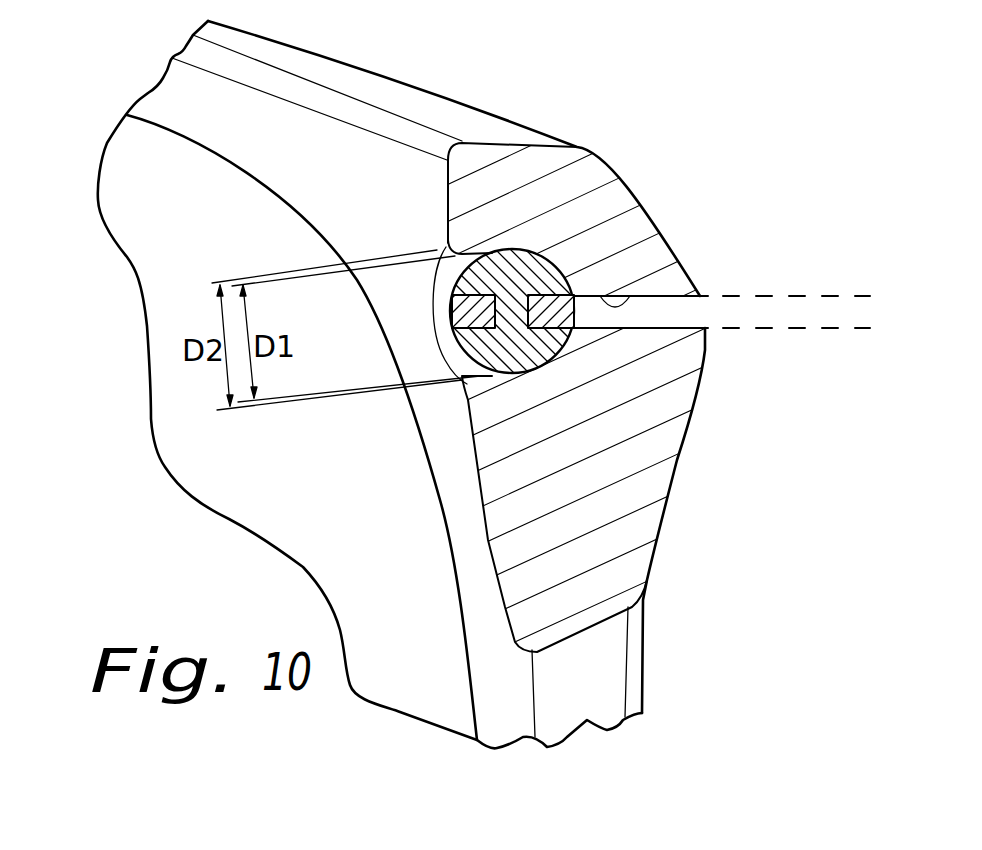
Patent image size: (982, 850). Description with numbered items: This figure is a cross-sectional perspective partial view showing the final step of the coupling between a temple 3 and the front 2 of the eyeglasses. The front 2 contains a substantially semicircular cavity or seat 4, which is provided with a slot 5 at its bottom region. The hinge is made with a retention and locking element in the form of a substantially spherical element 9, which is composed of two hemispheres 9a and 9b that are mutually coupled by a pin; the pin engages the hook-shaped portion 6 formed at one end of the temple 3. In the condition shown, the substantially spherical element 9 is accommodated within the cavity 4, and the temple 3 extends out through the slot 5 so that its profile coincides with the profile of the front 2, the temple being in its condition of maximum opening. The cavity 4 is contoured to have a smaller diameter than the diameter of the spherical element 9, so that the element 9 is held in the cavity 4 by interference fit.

The front 2 is at (323, 127).
The temple 3 is at (807, 308).
The cavity 4 is at (455, 362).
The slot 5 is at (636, 294).
The hook 6 is at (480, 313).
The substantially spherical element 9 is at (452, 312).
The hemisphere 9a is at (518, 270).
The hemisphere 9b is at (522, 350).